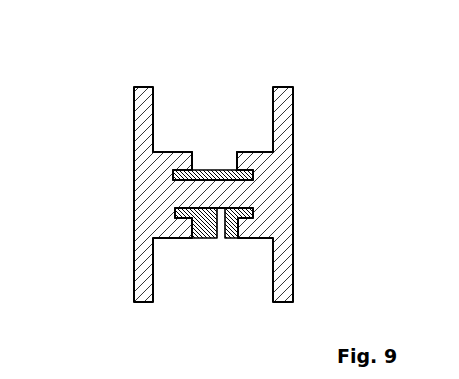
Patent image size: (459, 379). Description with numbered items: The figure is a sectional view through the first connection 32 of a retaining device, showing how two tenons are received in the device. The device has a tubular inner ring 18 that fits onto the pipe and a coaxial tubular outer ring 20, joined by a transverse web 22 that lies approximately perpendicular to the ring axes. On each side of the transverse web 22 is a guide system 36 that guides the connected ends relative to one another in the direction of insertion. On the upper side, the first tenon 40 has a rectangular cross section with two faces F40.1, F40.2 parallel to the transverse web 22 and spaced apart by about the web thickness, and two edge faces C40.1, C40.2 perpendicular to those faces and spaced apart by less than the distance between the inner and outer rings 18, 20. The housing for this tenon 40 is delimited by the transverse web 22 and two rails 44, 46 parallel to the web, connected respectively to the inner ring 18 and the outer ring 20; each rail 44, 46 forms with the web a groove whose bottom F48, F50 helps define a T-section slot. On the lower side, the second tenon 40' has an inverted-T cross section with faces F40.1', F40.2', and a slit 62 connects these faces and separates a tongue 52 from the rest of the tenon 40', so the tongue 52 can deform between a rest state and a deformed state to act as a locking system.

The inner ring 18 is at (143, 87).
The outer ring 20 is at (283, 87).
The transverse web 22 is at (207, 195).
The first connection 32 is at (320, 202).
The guide system 36 is at (167, 175).
The tenon 40 is at (212, 131).
The second tenon 40' is at (214, 262).
The rail 44 is at (168, 152).
The rail 46 is at (267, 152).
The tongue 52 is at (238, 238).
The slit 62 is at (220, 232).
The face of tenon F40.1 is at (229, 133).
The face of tenon F40.2 is at (270, 213).
The face of second tenon F40.1' is at (274, 240).
The face of second tenon F40.2' is at (217, 306).
The edge face of tenon C40.1 is at (255, 180).
The edge face of tenon C40.2 is at (173, 172).
The bottom of groove F48 is at (172, 181).
The bottom of groove F50 is at (257, 173).